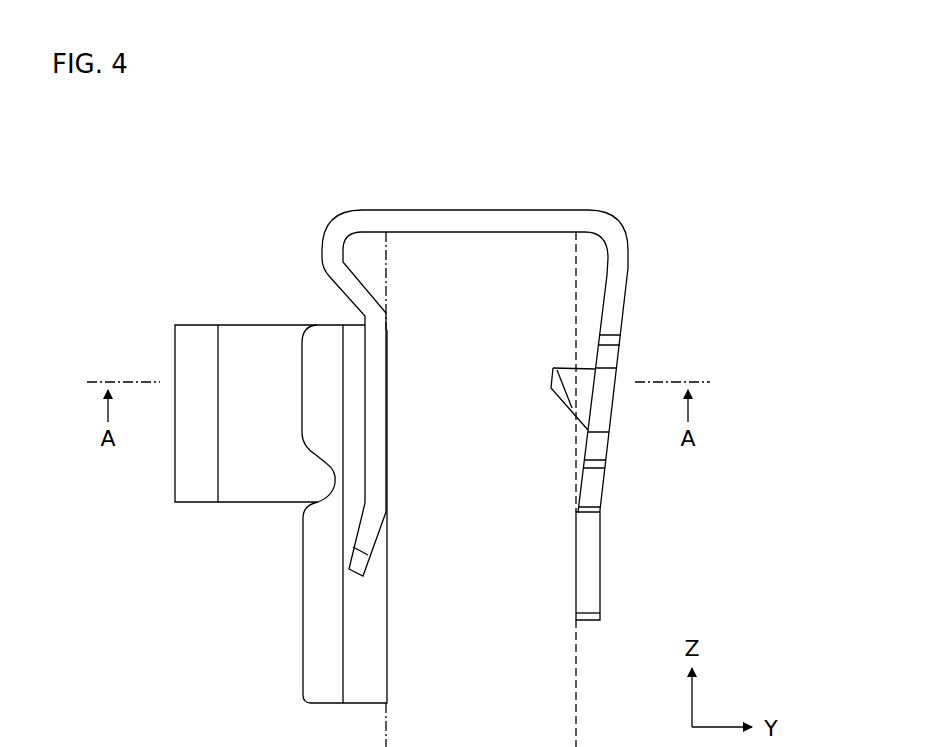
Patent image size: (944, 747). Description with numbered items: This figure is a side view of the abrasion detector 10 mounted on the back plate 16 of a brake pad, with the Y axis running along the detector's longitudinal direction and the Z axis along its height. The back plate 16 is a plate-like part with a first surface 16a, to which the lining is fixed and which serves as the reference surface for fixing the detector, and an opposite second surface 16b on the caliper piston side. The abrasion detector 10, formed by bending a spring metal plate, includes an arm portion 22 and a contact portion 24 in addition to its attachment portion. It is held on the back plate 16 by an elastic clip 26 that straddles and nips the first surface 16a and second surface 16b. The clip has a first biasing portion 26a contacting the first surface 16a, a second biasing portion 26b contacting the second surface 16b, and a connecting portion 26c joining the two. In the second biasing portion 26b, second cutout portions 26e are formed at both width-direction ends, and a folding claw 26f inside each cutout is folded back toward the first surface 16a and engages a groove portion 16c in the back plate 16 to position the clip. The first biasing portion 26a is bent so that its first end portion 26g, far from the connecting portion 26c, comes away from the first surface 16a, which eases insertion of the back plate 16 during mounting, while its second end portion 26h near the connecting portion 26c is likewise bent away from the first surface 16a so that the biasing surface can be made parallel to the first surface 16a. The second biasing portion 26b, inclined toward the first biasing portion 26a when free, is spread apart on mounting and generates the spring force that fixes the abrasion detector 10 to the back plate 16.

The abrasion detector 10 is at (250, 474).
The back plate 16 is at (487, 449).
The first surface 16a is at (380, 255).
The second surface 16b is at (578, 257).
The groove portion 16c is at (572, 408).
The arm portion 22 is at (187, 353).
The contact portion 24 is at (317, 672).
The elastic clip 26 is at (475, 381).
The first biasing portion 26a is at (366, 410).
The second biasing portion 26b is at (585, 444).
The connecting portion 26c is at (497, 220).
The second cutout portion 26e is at (614, 356).
The folding claw 26f is at (553, 368).
The first end portion 26g is at (368, 532).
The second end portion 26h is at (330, 245).